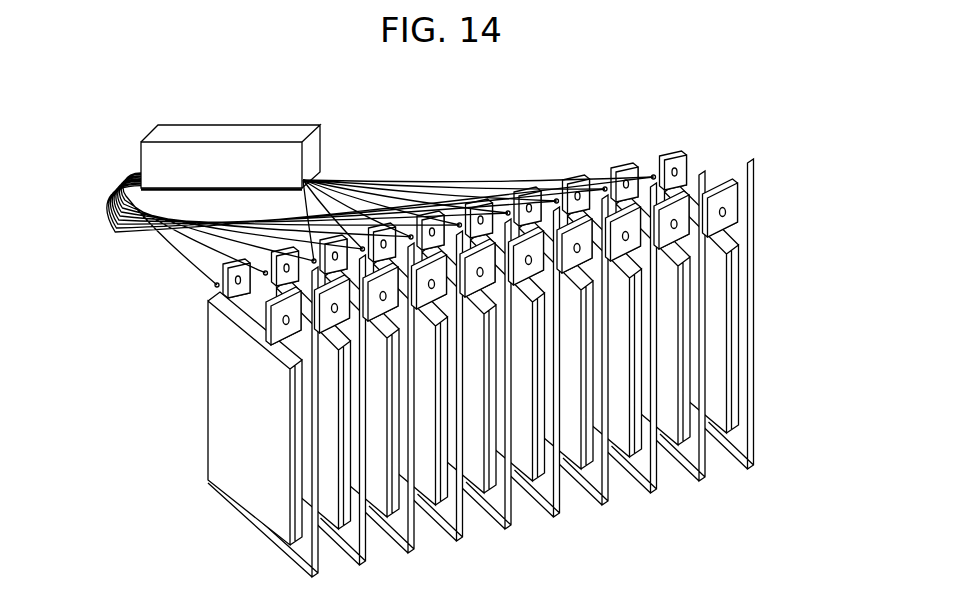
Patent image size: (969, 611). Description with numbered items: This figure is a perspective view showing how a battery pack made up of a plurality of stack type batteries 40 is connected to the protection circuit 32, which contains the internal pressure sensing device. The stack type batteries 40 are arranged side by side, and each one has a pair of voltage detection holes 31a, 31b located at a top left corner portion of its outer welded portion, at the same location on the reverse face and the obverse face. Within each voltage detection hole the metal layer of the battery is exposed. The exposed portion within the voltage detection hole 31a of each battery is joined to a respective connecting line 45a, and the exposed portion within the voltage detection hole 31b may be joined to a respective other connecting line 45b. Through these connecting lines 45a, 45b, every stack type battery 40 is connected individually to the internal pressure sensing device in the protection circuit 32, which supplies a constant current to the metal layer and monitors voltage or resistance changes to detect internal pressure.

The protection circuit 32 is at (275, 125).
The stack type battery 40 is at (640, 490).
The voltage detection hole 31a is at (212, 291).
The voltage detection hole 31b is at (218, 313).
The connecting line 45a is at (118, 240).
The connecting line 45b is at (163, 285).